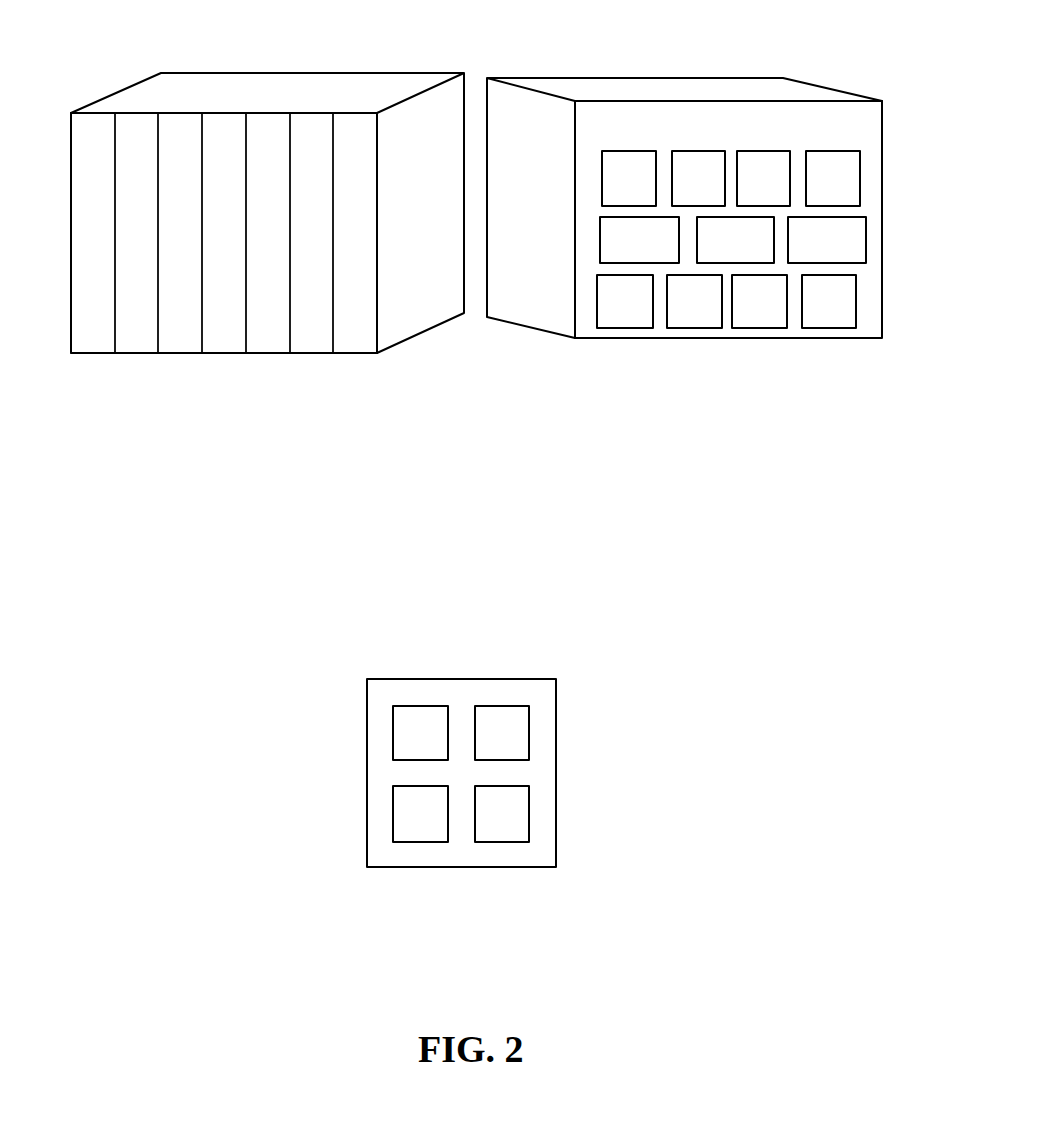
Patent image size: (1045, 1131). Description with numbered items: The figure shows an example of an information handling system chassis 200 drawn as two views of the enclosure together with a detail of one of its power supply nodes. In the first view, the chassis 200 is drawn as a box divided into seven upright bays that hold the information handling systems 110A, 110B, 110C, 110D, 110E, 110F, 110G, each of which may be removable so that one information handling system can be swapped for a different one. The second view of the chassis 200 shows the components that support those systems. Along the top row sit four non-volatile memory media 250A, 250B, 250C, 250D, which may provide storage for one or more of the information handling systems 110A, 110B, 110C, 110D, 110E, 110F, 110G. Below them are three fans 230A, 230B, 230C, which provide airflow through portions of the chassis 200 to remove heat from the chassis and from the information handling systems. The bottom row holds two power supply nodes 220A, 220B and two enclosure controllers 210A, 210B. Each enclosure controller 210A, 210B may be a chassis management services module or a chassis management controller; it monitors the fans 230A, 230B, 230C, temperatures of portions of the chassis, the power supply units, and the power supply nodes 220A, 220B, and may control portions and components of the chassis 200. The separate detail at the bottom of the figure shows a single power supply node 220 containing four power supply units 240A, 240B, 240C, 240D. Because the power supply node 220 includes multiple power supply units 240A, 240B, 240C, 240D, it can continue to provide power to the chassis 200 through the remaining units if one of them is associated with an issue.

The information handling system chassis 200 is at (268, 72).
The information handling system 110A is at (93, 353).
The information handling system 110B is at (138, 353).
The information handling system 110C is at (186, 353).
The information handling system 110D is at (225, 353).
The information handling system 110E is at (272, 353).
The information handling system 110F is at (313, 353).
The information handling system 110G is at (360, 353).
The non-volatile memory medium 250A is at (630, 151).
The non-volatile memory medium 250B is at (687, 151).
The non-volatile memory medium 250C is at (763, 151).
The non-volatile memory medium 250D is at (832, 151).
The fan 230A is at (661, 250).
The fan 230B is at (757, 250).
The fan 230C is at (848, 250).
The power supply node 220A is at (627, 328).
The power supply node 220B is at (827, 328).
The enclosure controller 210A is at (695, 328).
The enclosure controller 210B is at (758, 328).
The power supply node 220 is at (460, 867).
The power supply unit 240A is at (393, 732).
The power supply unit 240B is at (529, 732).
The power supply unit 240C is at (529, 812).
The power supply unit 240D is at (393, 812).